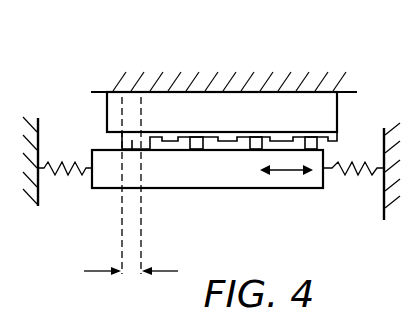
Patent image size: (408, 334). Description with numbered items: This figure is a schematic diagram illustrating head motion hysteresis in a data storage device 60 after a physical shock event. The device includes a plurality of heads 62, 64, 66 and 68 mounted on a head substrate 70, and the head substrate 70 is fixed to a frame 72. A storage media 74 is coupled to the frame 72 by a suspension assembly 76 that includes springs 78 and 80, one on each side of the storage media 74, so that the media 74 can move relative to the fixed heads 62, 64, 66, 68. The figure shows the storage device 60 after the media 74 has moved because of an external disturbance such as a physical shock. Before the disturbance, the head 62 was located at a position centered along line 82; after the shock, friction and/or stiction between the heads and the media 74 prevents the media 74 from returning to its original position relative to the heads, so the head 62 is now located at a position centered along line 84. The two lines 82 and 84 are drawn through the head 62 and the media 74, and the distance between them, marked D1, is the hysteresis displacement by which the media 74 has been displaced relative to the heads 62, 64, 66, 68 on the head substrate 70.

The data storage device 60 is at (312, 58).
The head 62 is at (122, 146).
The head 64 is at (198, 149).
The head 66 is at (256, 149).
The head 68 is at (315, 157).
The head substrate 70 is at (233, 100).
The frame 72 is at (28, 198).
The storage media 74 is at (233, 181).
The suspension assembly 76 is at (59, 112).
The spring 78 is at (60, 176).
The spring 80 is at (360, 177).
The line 82 is at (121, 207).
The line 84 is at (142, 207).
The hysteresis displacement D1 is at (128, 277).